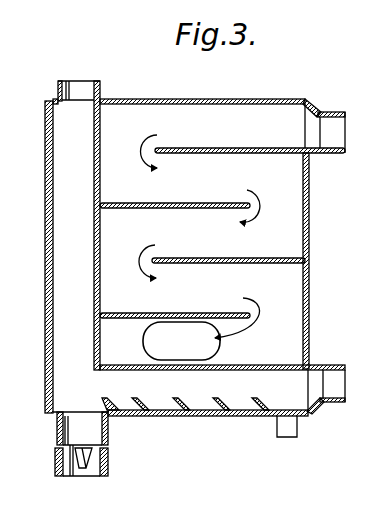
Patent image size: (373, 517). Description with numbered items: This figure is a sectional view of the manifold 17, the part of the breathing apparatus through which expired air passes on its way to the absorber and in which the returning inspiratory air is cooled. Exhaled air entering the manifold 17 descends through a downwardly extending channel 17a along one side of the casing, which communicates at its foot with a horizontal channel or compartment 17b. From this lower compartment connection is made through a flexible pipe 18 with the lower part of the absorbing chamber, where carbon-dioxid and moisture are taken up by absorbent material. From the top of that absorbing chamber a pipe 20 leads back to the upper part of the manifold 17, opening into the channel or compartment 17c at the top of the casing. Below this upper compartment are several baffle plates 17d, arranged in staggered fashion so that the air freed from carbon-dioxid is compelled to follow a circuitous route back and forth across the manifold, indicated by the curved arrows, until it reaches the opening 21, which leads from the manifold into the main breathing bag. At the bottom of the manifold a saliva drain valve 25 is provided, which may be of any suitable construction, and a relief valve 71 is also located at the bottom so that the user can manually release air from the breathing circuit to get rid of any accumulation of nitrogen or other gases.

The manifold 17 is at (53, 327).
The downwardly extending channel 17a is at (73, 257).
The horizontal channel or compartment 17b is at (192, 370).
The channel or compartment 17c is at (202, 136).
The baffle plates 17d is at (194, 203).
The flexible pipe 18 is at (333, 365).
The pipe 20 is at (345, 112).
The opening 21 is at (181, 341).
The saliva drain valve 25 is at (108, 455).
The relief valve 71 is at (282, 428).